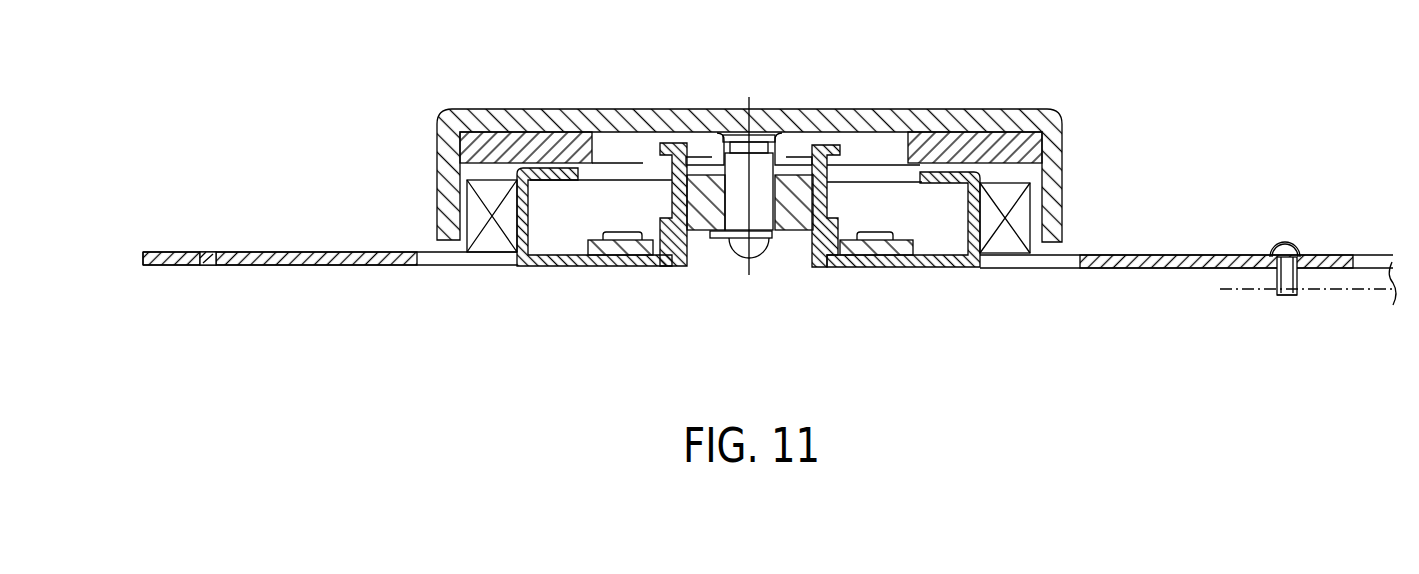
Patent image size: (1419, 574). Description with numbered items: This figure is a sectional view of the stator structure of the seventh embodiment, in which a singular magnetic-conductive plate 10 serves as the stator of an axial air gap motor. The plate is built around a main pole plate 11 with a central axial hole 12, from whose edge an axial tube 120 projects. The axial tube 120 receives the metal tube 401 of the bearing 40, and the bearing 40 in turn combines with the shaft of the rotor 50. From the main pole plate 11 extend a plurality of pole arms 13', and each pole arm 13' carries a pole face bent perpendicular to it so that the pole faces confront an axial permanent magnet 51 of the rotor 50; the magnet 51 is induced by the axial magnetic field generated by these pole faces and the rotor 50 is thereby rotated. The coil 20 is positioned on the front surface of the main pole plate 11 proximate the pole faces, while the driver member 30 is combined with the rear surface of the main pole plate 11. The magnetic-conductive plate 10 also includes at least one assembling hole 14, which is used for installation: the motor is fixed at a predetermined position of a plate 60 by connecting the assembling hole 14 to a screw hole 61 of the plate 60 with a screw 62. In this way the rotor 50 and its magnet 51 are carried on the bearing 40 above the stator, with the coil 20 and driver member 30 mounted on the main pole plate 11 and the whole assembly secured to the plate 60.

The singular magnetic-conductive plate 10 is at (353, 218).
The main pole plate 11 is at (321, 265).
The axial hole 12 is at (788, 263).
The axial tube 120 is at (857, 263).
The pole arm 13' is at (668, 256).
The assembling hole 14 is at (208, 264).
The coil 20 is at (1005, 243).
The driver member 30 is at (635, 263).
The bearing 40 is at (702, 187).
The metal tube 401 is at (833, 133).
The rotor 50 is at (935, 132).
The axial permanent magnet 51 is at (552, 138).
The plate 60 is at (1368, 283).
The screw hole 61 is at (1272, 279).
The screw 62 is at (1297, 253).